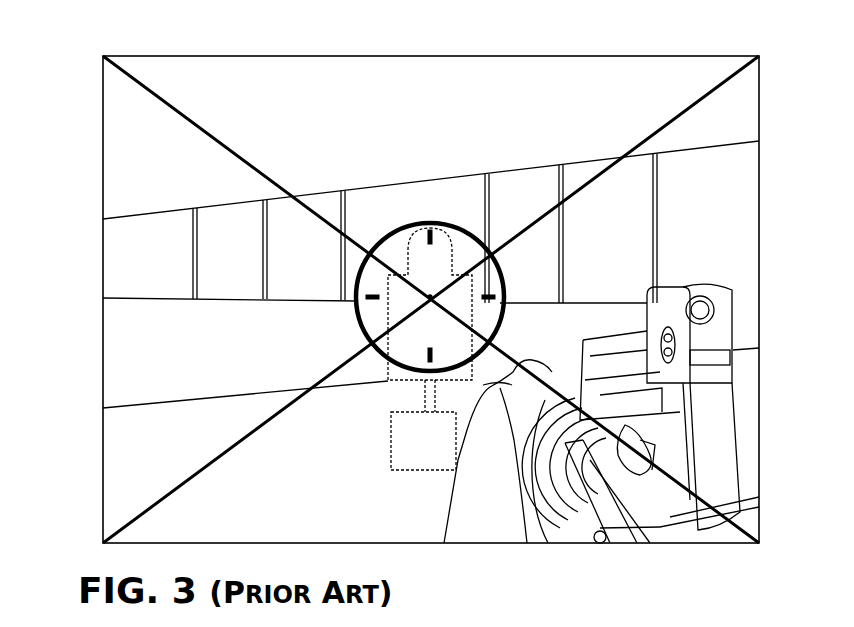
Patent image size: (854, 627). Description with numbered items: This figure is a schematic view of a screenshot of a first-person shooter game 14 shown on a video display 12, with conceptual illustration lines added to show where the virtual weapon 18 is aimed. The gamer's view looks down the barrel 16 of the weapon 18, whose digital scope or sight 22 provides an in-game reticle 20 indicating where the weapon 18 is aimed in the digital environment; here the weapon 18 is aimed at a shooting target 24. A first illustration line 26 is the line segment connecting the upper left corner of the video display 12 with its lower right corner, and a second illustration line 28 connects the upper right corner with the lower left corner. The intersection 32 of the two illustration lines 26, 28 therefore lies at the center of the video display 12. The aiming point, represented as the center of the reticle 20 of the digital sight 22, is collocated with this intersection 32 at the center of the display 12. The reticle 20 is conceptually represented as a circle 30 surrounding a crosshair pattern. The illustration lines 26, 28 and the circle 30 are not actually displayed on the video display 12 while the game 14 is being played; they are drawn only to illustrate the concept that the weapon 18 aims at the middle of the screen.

The video display 12 is at (103, 152).
The first-person shooter game 14 is at (150, 108).
The barrel 16 is at (553, 348).
The virtual weapon 18 is at (753, 395).
The in-game reticle 20 is at (432, 230).
The digital scope or sight 22 is at (700, 310).
The shooting target 24 is at (405, 302).
The first illustration line 26 is at (240, 153).
The second illustration line 28 is at (666, 120).
The circle 30 is at (357, 270).
The intersection 32 is at (430, 297).